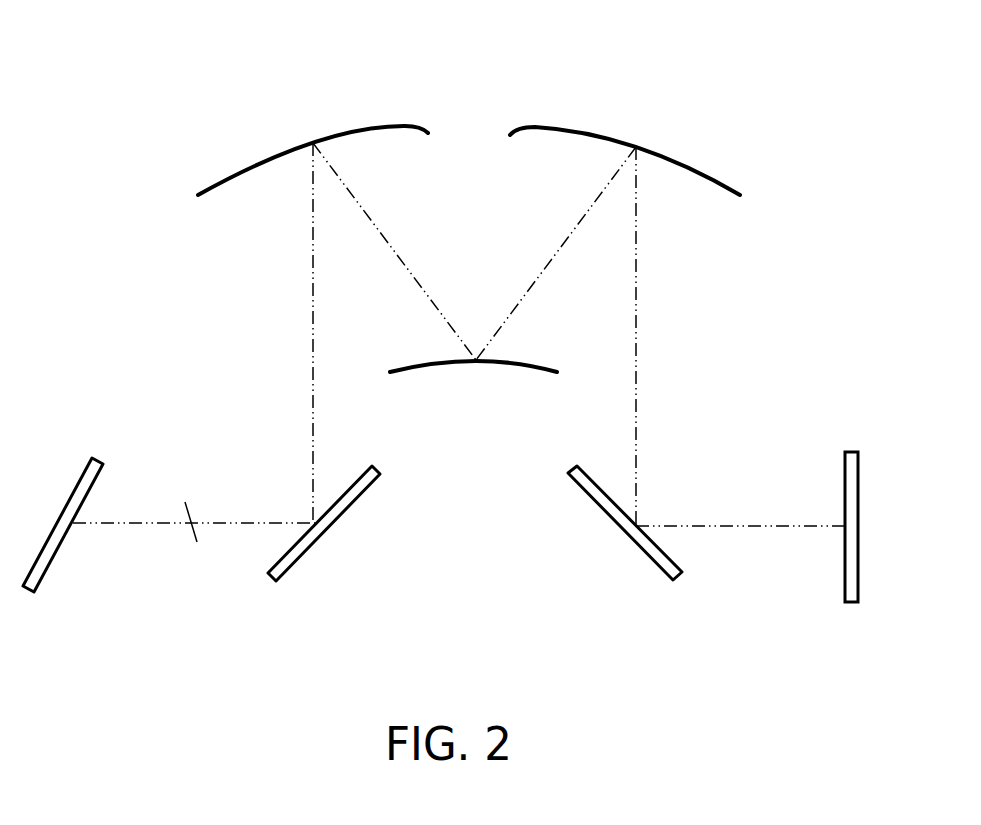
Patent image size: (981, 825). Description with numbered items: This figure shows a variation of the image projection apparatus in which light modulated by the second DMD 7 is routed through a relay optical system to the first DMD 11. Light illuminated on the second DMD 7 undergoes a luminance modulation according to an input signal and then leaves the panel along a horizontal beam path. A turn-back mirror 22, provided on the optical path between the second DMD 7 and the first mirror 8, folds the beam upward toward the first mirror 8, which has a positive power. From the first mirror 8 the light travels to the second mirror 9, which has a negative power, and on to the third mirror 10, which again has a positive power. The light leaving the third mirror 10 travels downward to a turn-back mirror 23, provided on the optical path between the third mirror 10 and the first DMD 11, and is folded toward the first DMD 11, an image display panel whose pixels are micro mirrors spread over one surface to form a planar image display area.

The second DMD 7 is at (858, 492).
The first mirror 8 is at (690, 158).
The second mirror 9 is at (440, 362).
The third mirror 10 is at (270, 148).
The first DMD 11 is at (97, 467).
The turn-back mirror 22 is at (600, 512).
The turn-back mirror 23 is at (338, 520).